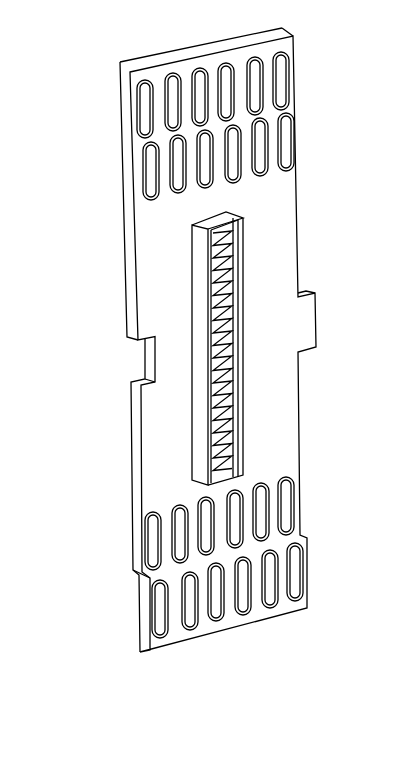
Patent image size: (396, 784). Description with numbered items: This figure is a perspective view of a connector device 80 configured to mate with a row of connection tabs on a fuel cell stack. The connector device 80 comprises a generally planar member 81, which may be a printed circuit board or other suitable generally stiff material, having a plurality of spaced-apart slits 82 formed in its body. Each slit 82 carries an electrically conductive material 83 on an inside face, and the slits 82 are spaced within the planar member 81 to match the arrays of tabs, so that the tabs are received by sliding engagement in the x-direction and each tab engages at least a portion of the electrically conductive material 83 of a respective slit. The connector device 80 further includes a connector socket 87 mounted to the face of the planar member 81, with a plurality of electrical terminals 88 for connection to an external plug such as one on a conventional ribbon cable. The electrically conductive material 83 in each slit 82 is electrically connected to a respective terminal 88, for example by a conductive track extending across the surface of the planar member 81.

The connector device 80 is at (106, 58).
The planar member 81 is at (150, 293).
The slits 82 is at (278, 79).
The electrically conductive material 83 is at (285, 150).
The connector socket 87 is at (197, 448).
The electrical terminals 88 is at (232, 333).